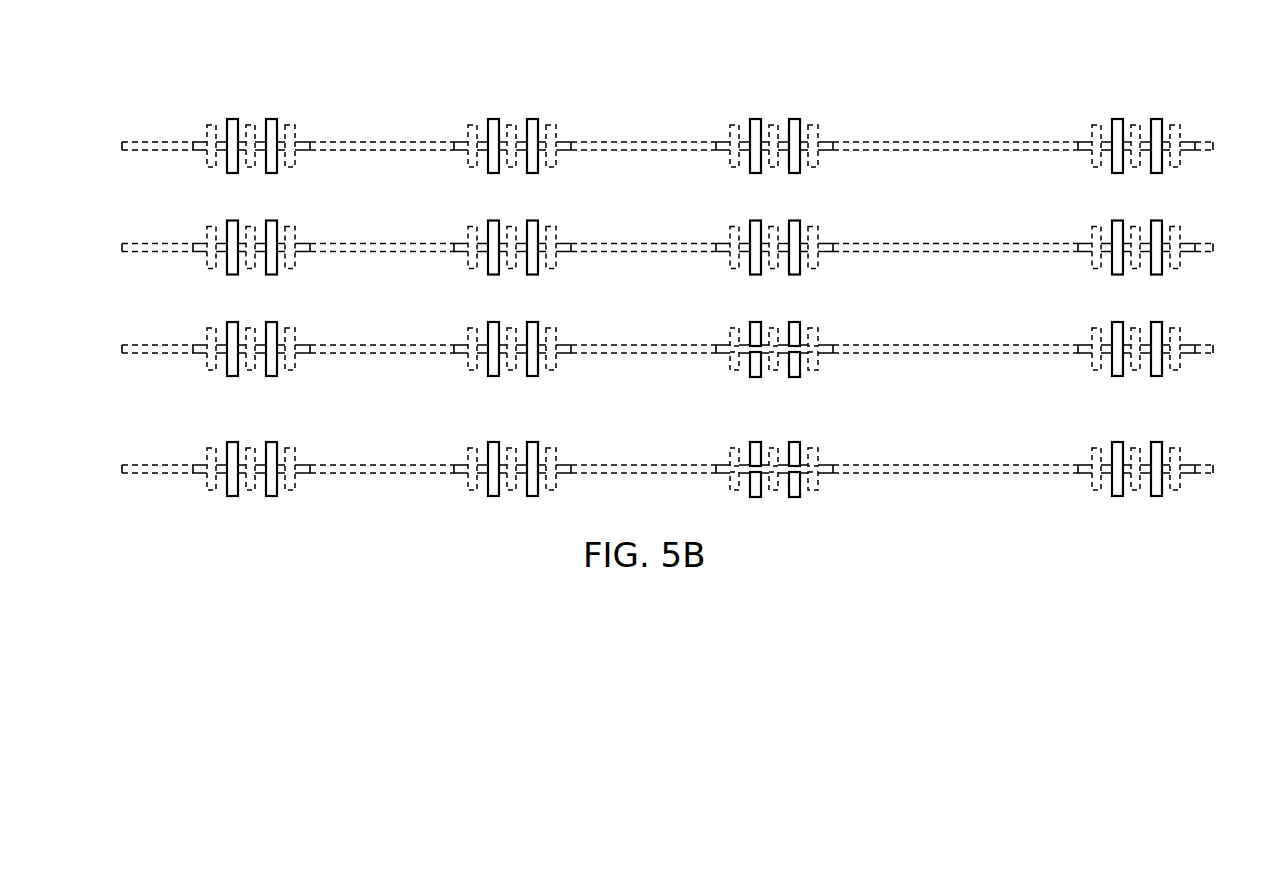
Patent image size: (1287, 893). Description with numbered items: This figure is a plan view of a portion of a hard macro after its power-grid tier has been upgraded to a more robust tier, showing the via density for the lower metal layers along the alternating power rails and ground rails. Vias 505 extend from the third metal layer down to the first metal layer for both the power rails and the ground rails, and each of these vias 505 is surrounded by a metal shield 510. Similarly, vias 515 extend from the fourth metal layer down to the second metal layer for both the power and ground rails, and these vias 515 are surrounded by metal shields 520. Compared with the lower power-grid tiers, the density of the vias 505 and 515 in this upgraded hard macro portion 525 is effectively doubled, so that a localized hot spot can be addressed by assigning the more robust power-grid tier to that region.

The vias 505 is at (236, 107).
The metal shields 510 is at (256, 133).
The vias 515 is at (755, 140).
The metal shields 520 is at (785, 132).
The standard cell layout 525 is at (563, 89).